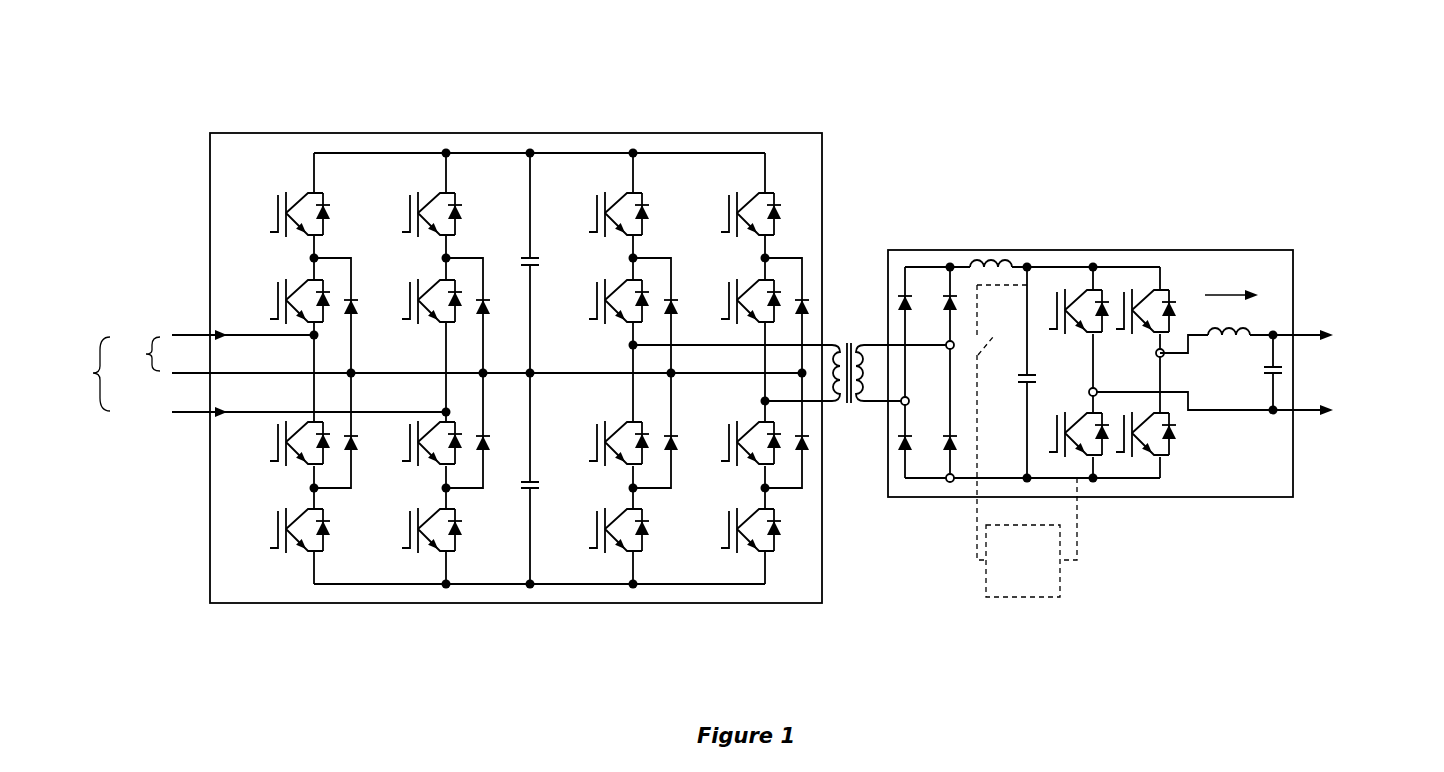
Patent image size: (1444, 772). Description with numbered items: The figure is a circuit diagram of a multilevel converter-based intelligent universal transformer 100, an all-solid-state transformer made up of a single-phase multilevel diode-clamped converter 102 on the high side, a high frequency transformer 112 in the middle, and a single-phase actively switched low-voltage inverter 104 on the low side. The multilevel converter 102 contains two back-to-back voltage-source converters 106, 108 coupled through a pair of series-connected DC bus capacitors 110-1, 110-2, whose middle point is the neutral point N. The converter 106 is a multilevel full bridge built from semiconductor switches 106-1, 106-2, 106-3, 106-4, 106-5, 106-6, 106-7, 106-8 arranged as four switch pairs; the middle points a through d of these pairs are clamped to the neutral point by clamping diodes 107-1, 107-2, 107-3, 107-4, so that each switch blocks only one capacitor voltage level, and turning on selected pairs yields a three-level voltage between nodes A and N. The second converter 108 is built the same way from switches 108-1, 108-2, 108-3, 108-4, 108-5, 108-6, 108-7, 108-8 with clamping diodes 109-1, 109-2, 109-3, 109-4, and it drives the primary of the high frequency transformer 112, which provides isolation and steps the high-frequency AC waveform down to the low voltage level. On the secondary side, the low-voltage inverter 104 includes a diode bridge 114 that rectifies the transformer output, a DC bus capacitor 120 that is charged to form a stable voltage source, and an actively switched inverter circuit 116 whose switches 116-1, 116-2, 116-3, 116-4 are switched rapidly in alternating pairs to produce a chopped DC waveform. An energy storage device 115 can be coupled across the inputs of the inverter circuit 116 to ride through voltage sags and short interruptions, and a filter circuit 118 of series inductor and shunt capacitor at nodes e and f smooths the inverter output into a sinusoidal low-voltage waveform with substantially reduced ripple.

The intelligent universal transformer 100 is at (777, 37).
The multilevel diode-clamped converter 102 is at (822, 133).
The low-voltage inverter 104 is at (1293, 250).
The voltage-source converter 106 is at (420, 114).
The voltage-source converter 108 is at (663, 114).
The semiconductor switch 106-1 is at (280, 201).
The semiconductor switch 106-2 is at (280, 286).
The semiconductor switch 106-3 is at (413, 230).
The semiconductor switch 106-4 is at (413, 315).
The semiconductor switch 106-5 is at (280, 457).
The semiconductor switch 106-6 is at (280, 543).
The semiconductor switch 106-7 is at (413, 457).
The semiconductor switch 106-8 is at (413, 536).
The clamping diode 107-1 is at (369, 320).
The clamping diode 107-2 is at (368, 452).
The clamping diode 107-3 is at (501, 320).
The clamping diode 107-4 is at (501, 435).
The semiconductor switch 108-1 is at (603, 202).
The semiconductor switch 108-2 is at (603, 289).
The semiconductor switch 108-3 is at (734, 207).
The semiconductor switch 108-4 is at (734, 292).
The semiconductor switch 108-5 is at (602, 432).
The semiconductor switch 108-6 is at (602, 520).
The semiconductor switch 108-7 is at (733, 429).
The semiconductor switch 108-8 is at (734, 541).
The clamping diode 109-1 is at (688, 320).
The clamping diode 109-2 is at (690, 458).
The clamping diode 109-3 is at (813, 293).
The clamping diode 109-4 is at (817, 445).
The DC bus capacitor 110-1 is at (514, 263).
The DC bus capacitor 110-2 is at (514, 478).
The high frequency transformer 112 is at (870, 330).
The diode bridge 114 is at (955, 236).
The energy storage device 115 is at (1012, 587).
The actively switched inverter circuit 116 is at (1120, 236).
The semiconductor switch 116-1 is at (1072, 322).
The semiconductor switch 116-2 is at (1074, 425).
The semiconductor switch 116-3 is at (1140, 316).
The semiconductor switch 116-4 is at (1144, 435).
The filter circuit 118 is at (1259, 236).
The DC bus capacitor 120 is at (1013, 373).